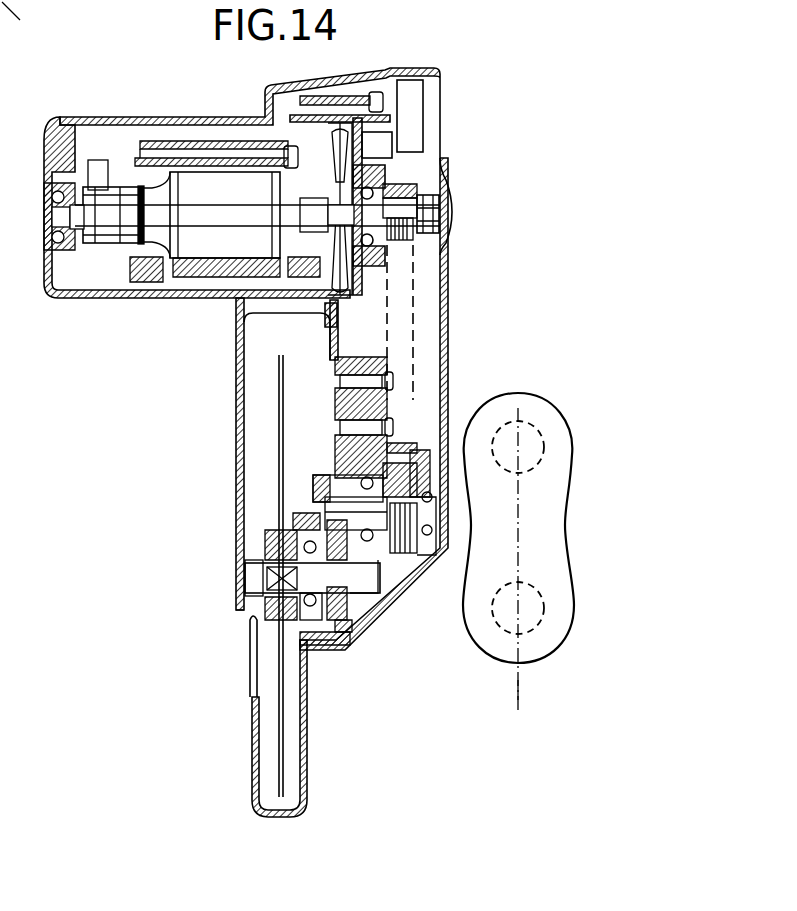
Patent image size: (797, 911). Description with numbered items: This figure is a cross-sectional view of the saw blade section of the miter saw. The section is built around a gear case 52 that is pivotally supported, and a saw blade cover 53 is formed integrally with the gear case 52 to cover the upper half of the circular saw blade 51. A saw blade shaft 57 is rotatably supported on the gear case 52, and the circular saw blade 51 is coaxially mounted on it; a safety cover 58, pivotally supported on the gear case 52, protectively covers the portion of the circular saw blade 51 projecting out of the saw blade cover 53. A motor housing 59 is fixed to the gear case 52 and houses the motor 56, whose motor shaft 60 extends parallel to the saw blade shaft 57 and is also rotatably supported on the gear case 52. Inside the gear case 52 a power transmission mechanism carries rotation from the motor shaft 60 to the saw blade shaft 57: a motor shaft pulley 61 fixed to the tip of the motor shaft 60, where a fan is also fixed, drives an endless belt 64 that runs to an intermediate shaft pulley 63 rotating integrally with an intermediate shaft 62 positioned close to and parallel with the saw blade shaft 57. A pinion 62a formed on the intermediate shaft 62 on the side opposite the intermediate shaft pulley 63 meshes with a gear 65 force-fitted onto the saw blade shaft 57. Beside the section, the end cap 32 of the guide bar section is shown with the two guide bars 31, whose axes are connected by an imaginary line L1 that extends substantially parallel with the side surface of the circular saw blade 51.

The motor housing 59 is at (166, 115).
The motor shaft 60 is at (418, 198).
The motor shaft pulley 61 is at (420, 238).
The gear case 52 is at (446, 286).
The endless belt 64 is at (417, 343).
The intermediate shaft pulley 63 is at (427, 463).
The saw blade cover 53 is at (237, 415).
The pinion 62a is at (330, 473).
The intermediate shaft 62 is at (327, 498).
The motor 56 is at (218, 248).
The saw blade shaft 57 is at (266, 608).
The circular saw blade 51 is at (277, 668).
The gear 65 is at (337, 645).
The safety cover 58 is at (307, 745).
The end cap 32 is at (560, 527).
The guide bar 31 is at (545, 440).
The imaginary line L1 is at (522, 688).